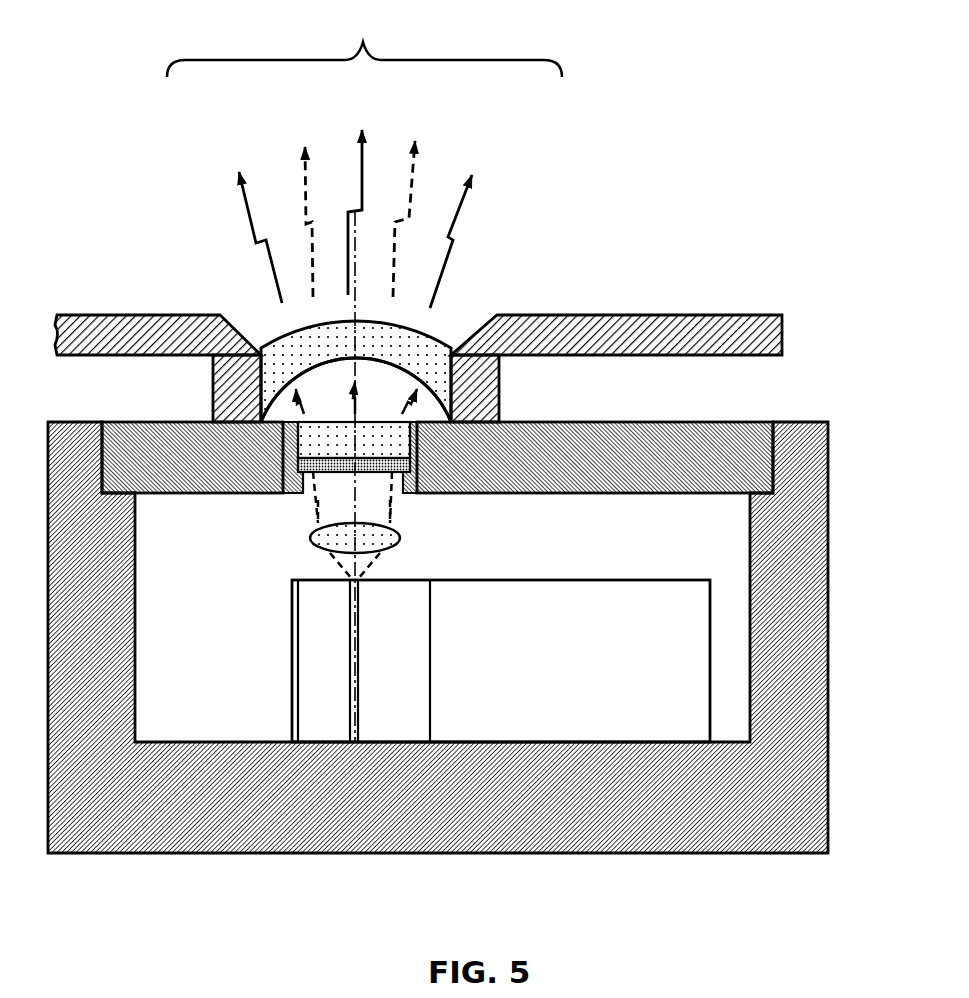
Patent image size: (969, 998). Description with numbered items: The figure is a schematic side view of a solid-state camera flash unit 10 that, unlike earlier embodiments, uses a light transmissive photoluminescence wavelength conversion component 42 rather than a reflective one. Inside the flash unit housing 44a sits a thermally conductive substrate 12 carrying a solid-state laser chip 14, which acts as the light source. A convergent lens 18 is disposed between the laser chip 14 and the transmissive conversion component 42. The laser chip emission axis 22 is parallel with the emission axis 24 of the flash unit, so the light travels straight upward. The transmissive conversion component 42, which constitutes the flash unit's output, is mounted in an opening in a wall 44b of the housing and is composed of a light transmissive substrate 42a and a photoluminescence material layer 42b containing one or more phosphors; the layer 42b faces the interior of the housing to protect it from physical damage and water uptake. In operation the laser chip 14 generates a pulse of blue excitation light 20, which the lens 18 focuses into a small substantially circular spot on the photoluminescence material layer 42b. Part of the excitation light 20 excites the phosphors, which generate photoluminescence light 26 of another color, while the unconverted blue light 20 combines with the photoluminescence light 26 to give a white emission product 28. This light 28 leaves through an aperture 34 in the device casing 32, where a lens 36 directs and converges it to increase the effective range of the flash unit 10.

The flash unit 10 is at (458, 480).
The thermally conductive substrate 12 is at (572, 686).
The solid-state laser chip 14 is at (283, 580).
The lens 18 is at (312, 543).
The excitation light 20 is at (447, 543).
The laser chip emission axis/plane 22 is at (352, 507).
The emission axis of the flash unit 24 is at (301, 520).
The photoluminescence light 26 is at (358, 255).
The emission product 28 is at (364, 39).
The device casing 32 is at (145, 333).
The aperture 34 is at (268, 331).
The lens 36 is at (420, 345).
The light transmissive photoluminescence wavelength conversion component 42 is at (283, 447).
The light transmissive substrate 42a is at (402, 443).
The photoluminescence material layer 42b is at (412, 468).
The flash unit housing 44a is at (460, 821).
The wall of flash unit housing 44b is at (703, 474).